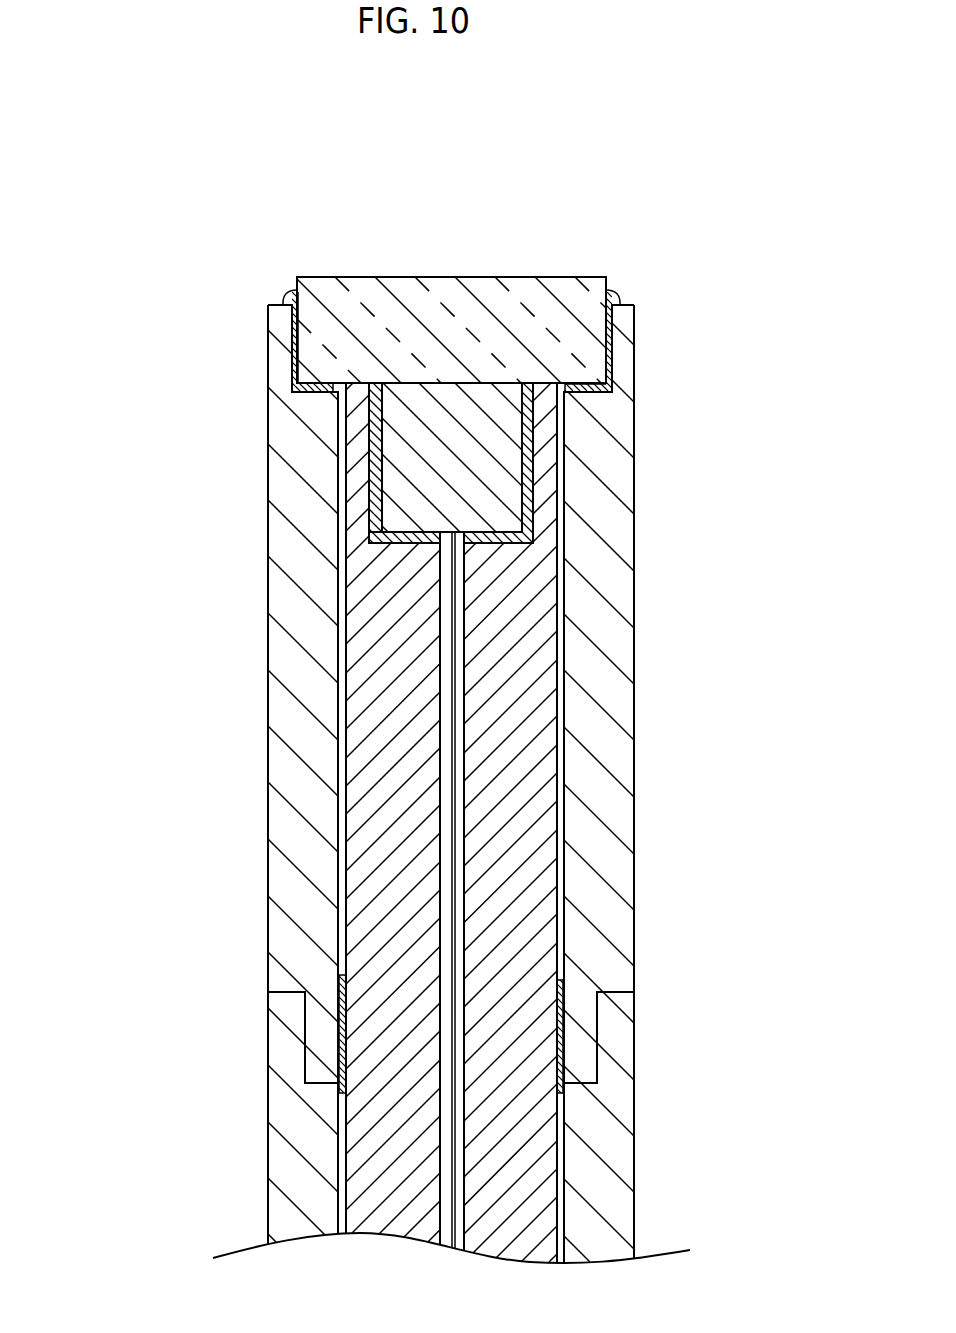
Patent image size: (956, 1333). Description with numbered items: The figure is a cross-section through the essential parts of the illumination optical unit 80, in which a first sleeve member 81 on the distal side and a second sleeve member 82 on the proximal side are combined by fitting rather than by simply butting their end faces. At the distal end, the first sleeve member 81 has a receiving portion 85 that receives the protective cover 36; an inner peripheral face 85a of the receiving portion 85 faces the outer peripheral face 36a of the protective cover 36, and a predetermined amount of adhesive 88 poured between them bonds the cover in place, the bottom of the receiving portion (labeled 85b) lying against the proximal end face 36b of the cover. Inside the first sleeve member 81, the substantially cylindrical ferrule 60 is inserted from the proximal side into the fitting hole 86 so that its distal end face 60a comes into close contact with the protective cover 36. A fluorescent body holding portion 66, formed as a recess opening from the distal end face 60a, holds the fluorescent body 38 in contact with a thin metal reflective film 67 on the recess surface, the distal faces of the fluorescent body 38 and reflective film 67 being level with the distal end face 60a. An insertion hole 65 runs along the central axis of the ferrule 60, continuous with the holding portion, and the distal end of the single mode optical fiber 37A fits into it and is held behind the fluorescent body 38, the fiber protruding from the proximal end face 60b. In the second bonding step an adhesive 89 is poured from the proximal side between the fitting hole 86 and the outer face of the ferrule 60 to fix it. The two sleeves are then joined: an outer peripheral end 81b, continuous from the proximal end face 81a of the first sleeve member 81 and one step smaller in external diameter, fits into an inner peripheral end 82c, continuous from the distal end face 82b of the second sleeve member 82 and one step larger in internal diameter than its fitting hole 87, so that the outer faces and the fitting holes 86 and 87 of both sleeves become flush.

The illumination optical unit 80 is at (203, 289).
The protective cover 36 is at (412, 297).
The outer peripheral face of the protective cover 36a is at (612, 358).
The proximal end face of the protective cover 36b is at (305, 398).
The fluorescent body 38 is at (435, 423).
The single mode optical fiber 37A is at (452, 724).
The ferrule 60 is at (365, 718).
The distal end face of the ferrule 60a is at (360, 383).
The proximal end face of the ferrule 60b is at (350, 662).
The insertion hole 65 is at (436, 980).
The fluorescent body holding portion 66 is at (376, 476).
The reflective film 67 is at (372, 517).
The first sleeve member 81 is at (616, 622).
The proximal end face of the first sleeve member 81a is at (580, 1087).
The outer peripheral end of the first sleeve member 81b is at (598, 1015).
The second sleeve member 82 is at (602, 1223).
The distal end face of the second sleeve member 82b is at (617, 990).
The inner peripheral end of the second sleeve member 82c is at (597, 1038).
The receiving portion 85 is at (592, 242).
The inner peripheral face of the receiving portion 85a is at (596, 320).
The bottom portion of sealing layer 85b is at (588, 380).
The fitting hole of the first sleeve member 86 is at (560, 876).
The fitting hole of the second sleeve member 87 is at (560, 1160).
The adhesive 88 is at (634, 297).
The adhesive 89 is at (572, 986).